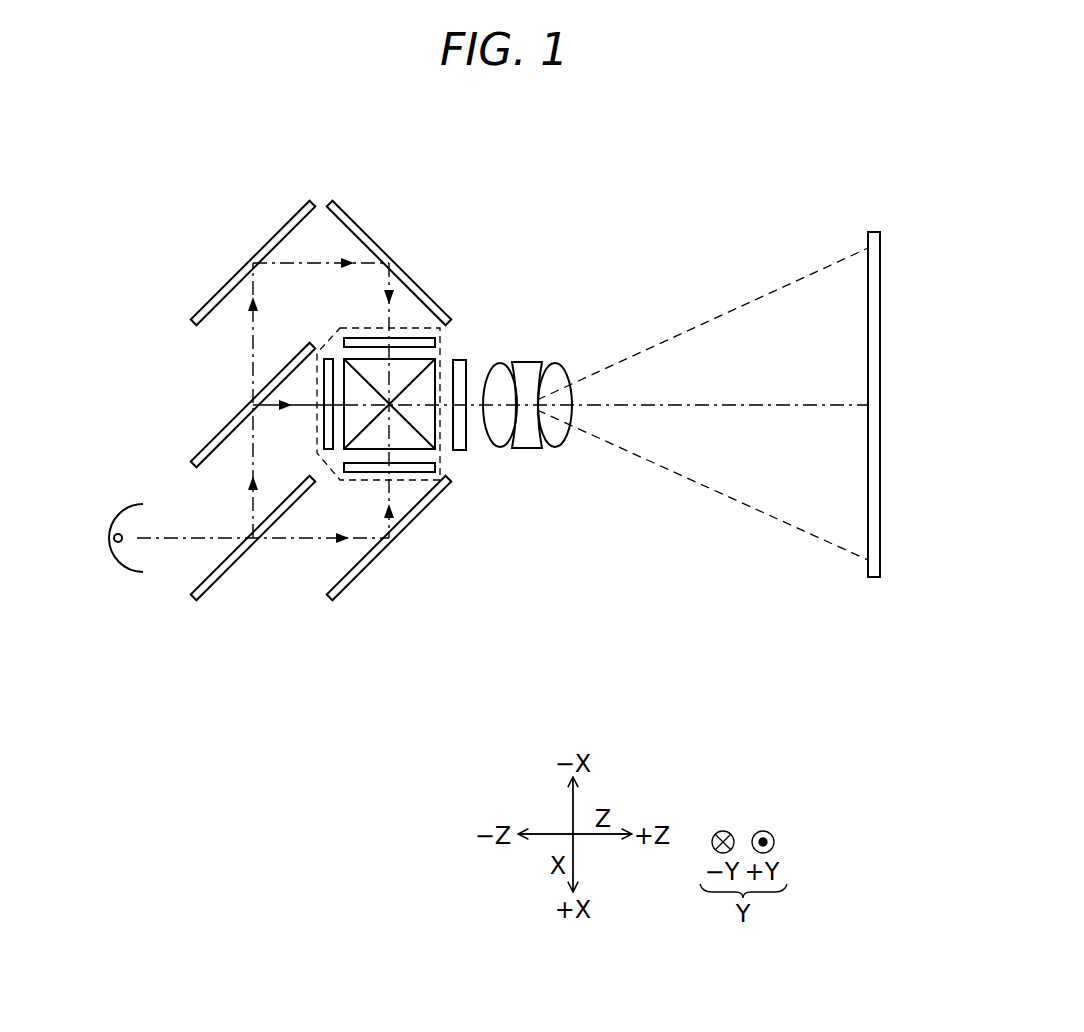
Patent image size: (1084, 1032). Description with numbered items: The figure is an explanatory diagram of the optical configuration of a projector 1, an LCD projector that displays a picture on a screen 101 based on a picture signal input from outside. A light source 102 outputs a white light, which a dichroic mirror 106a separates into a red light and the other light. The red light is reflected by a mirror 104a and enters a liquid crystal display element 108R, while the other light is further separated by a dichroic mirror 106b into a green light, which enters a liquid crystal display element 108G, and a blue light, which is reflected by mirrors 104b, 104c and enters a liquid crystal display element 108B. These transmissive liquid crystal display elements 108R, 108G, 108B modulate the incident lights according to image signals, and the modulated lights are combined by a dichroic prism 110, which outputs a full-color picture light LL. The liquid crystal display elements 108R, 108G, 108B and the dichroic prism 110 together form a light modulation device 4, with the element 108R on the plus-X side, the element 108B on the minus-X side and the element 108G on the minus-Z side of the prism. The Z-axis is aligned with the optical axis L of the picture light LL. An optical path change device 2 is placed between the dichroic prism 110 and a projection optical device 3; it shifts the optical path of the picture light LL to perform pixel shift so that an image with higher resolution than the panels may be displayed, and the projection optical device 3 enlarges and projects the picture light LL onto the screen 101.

The projector 1 is at (752, 168).
The optical path change device 2 is at (467, 437).
The projection optical device 3 is at (568, 453).
The light modulation device 4 is at (413, 328).
The screen 101 is at (872, 578).
The light source 102 is at (120, 572).
The mirror 104a is at (365, 580).
The mirror 104b is at (267, 238).
The mirror 104c is at (375, 233).
The dichroic mirror 106a is at (225, 580).
The dichroic mirror 106b is at (208, 437).
The liquid crystal display element 108B is at (440, 342).
The liquid crystal display element 108G is at (323, 420).
The liquid crystal display element 108R is at (368, 473).
The dichroic prism 110 is at (440, 361).
The optical axis L is at (797, 406).
The picture light LL is at (445, 440).